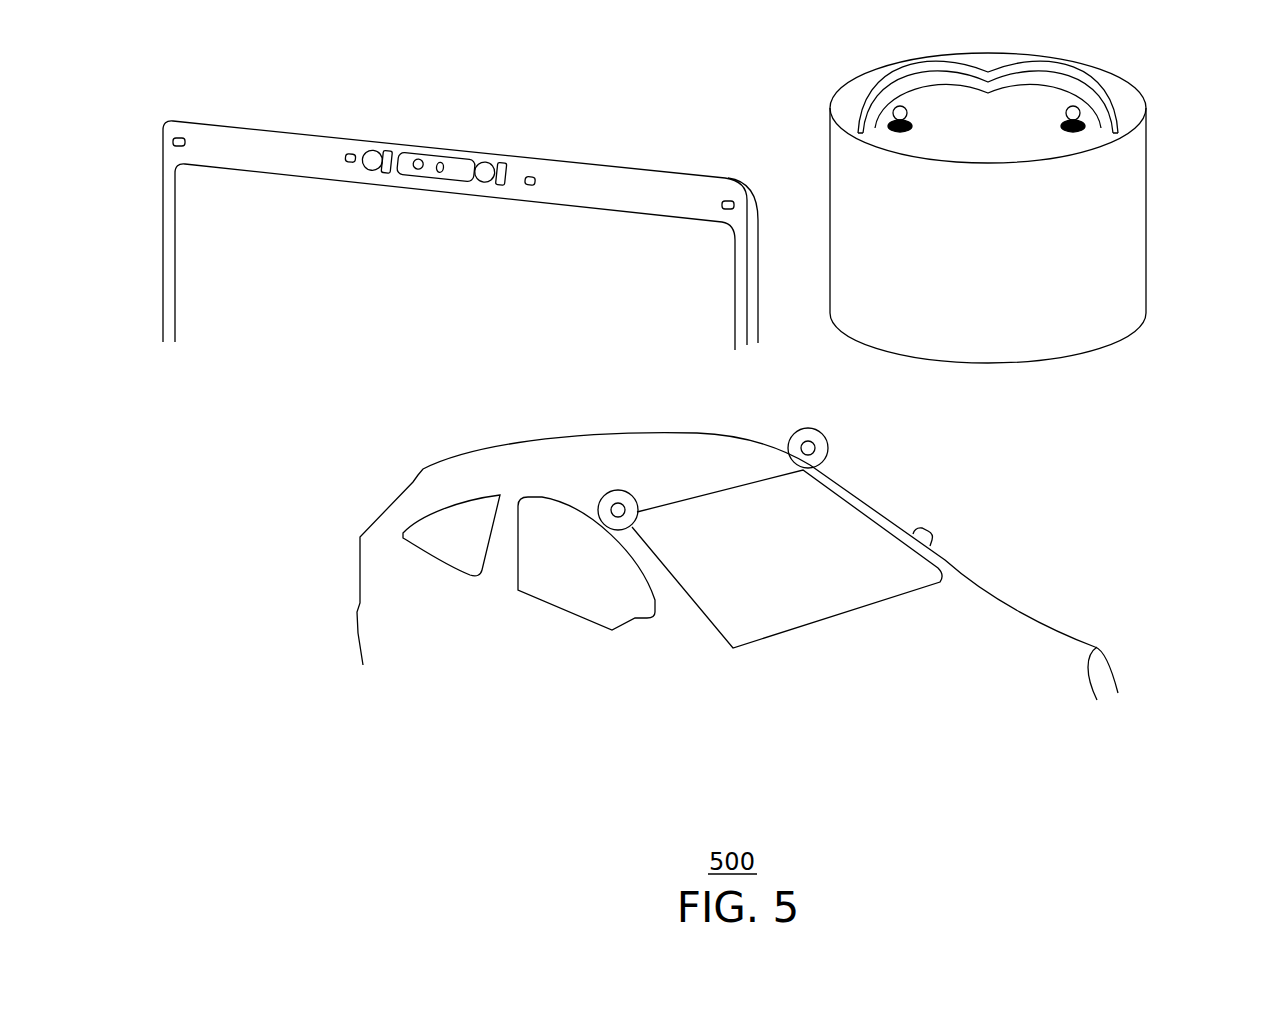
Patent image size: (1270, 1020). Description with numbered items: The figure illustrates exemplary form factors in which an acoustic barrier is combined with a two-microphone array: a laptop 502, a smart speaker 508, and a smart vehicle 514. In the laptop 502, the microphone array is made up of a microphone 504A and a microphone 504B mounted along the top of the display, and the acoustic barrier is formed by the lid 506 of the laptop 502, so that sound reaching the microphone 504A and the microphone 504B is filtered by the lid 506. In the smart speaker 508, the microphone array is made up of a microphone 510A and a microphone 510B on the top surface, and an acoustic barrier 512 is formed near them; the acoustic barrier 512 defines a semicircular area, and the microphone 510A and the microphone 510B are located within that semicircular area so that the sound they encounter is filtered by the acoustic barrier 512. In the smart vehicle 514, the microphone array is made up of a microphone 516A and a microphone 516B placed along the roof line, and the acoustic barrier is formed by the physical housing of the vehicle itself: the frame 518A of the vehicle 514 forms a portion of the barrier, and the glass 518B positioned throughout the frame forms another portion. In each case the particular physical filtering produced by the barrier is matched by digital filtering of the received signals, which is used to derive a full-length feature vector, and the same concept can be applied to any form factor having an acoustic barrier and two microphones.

The laptop 502 is at (238, 335).
The microphone 504A is at (374, 134).
The microphone 504B is at (503, 192).
The lid 506 is at (557, 157).
The smart speaker 508 is at (873, 318).
The microphone 510A is at (895, 106).
The microphone 510B is at (1080, 118).
The acoustic barrier 512 is at (1092, 77).
The smart vehicle 514 is at (397, 647).
The microphone 516A is at (612, 486).
The microphone 516B is at (817, 422).
The frame 518A is at (595, 605).
The glass 518B is at (840, 543).